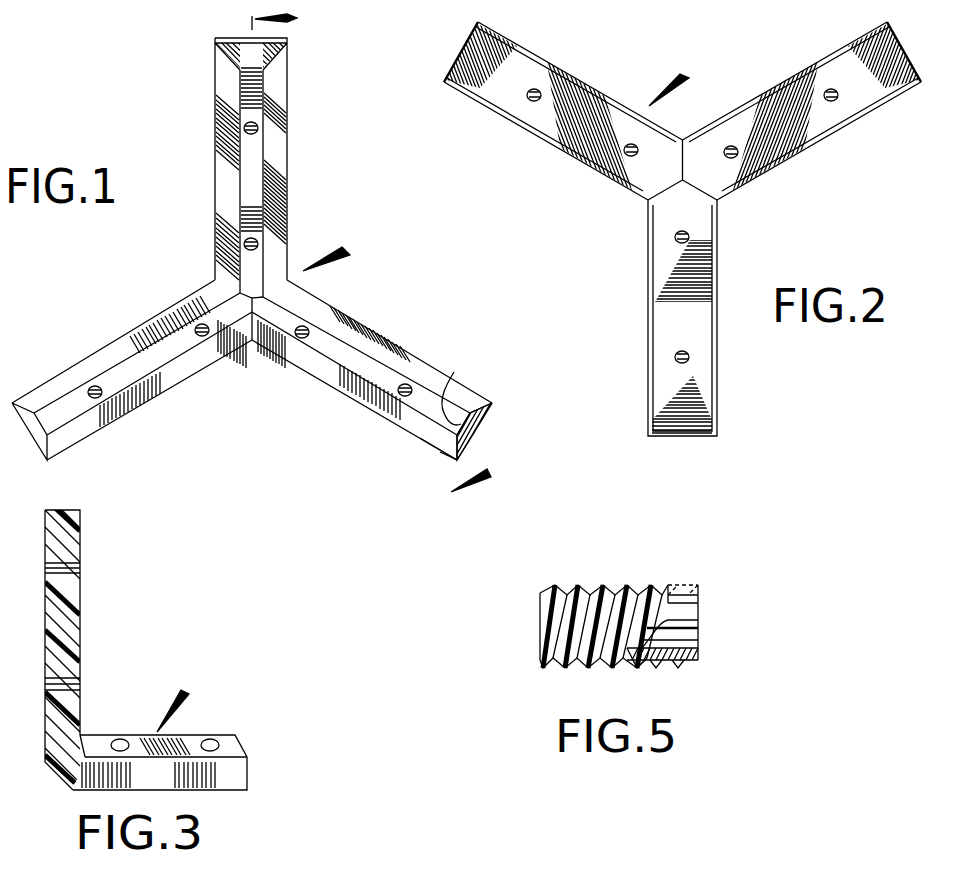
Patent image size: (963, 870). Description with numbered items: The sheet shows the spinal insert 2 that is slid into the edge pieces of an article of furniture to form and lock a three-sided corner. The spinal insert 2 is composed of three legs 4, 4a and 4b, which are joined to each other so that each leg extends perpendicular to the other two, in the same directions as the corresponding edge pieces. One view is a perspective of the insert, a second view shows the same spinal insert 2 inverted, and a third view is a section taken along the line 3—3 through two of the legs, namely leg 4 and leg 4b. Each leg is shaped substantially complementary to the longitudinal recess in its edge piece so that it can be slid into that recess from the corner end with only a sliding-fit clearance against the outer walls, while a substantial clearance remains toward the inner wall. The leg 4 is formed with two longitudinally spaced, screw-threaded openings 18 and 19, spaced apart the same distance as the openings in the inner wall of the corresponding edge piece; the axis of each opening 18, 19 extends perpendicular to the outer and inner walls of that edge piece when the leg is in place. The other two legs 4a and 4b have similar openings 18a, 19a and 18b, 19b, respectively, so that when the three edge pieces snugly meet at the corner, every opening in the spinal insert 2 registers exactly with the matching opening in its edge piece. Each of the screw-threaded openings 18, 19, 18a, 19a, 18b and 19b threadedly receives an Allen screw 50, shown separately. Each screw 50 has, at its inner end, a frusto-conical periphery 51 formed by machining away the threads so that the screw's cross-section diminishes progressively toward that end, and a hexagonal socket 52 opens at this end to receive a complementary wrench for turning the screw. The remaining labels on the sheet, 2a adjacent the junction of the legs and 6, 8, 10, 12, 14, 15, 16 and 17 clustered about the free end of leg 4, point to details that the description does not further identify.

In FIG. 1, the spinal insert 2 is at (330, 250).
In FIG. 2, the spinal insert 2 is at (682, 126).
In FIG. 3, the spinal insert 2 is at (175, 700).
In FIG. 1, the junction apex of connector 2a is at (212, 298).
In FIG. 1, the section line 3 is at (362, 261).
In FIG. 1, the leg 4 is at (380, 343).
In FIG. 2, the leg 4 is at (548, 118).
In FIG. 3, the leg 4 is at (200, 790).
In FIG. 1, the leg 4a is at (90, 357).
In FIG. 2, the leg 4a is at (806, 130).
In FIG. 1, the leg 4b is at (287, 65).
In FIG. 2, the leg 4b is at (712, 345).
In FIG. 3, the leg 4b is at (78, 613).
In FIG. 1, the end face of arm 6 is at (472, 428).
In FIG. 1, the outer side face 8 is at (487, 405).
In FIG. 1, the bottom edge 10 is at (458, 467).
In FIG. 1, the groove wall 12 is at (470, 404).
In FIG. 1, the front face 14 is at (452, 447).
In FIG. 1, the groove apex 15 is at (478, 397).
In FIG. 1, the hook portion 16 is at (462, 390).
In FIG. 1, the front end edge 17 is at (456, 455).
In FIG. 1, the screw-threaded opening 18 is at (409, 384).
In FIG. 2, the screw-threaded opening 18 is at (537, 90).
In FIG. 3, the screw-threaded opening 18 is at (214, 739).
In FIG. 1, the screw-threaded opening 18a is at (97, 398).
In FIG. 2, the screw-threaded opening 18a is at (835, 100).
In FIG. 1, the screw-threaded opening 18b is at (258, 130).
In FIG. 2, the screw-threaded opening 18b is at (675, 357).
In FIG. 3, the screw-threaded opening 18b is at (80, 574).
In FIG. 1, the screw-threaded opening 19 is at (306, 326).
In FIG. 2, the screw-threaded opening 19 is at (629, 145).
In FIG. 3, the screw-threaded opening 19 is at (120, 739).
In FIG. 1, the screw-threaded opening 19a is at (203, 337).
In FIG. 2, the screw-threaded opening 19a is at (736, 158).
In FIG. 1, the screw-threaded opening 19b is at (262, 244).
In FIG. 2, the screw-threaded opening 19b is at (675, 239).
In FIG. 3, the screw-threaded opening 19b is at (80, 684).
In FIG. 5, the Allen screw 50 is at (607, 587).
In FIG. 5, the frusto-conical periphery 51 is at (688, 664).
In FIG. 5, the hexagonal socket 52 is at (692, 637).